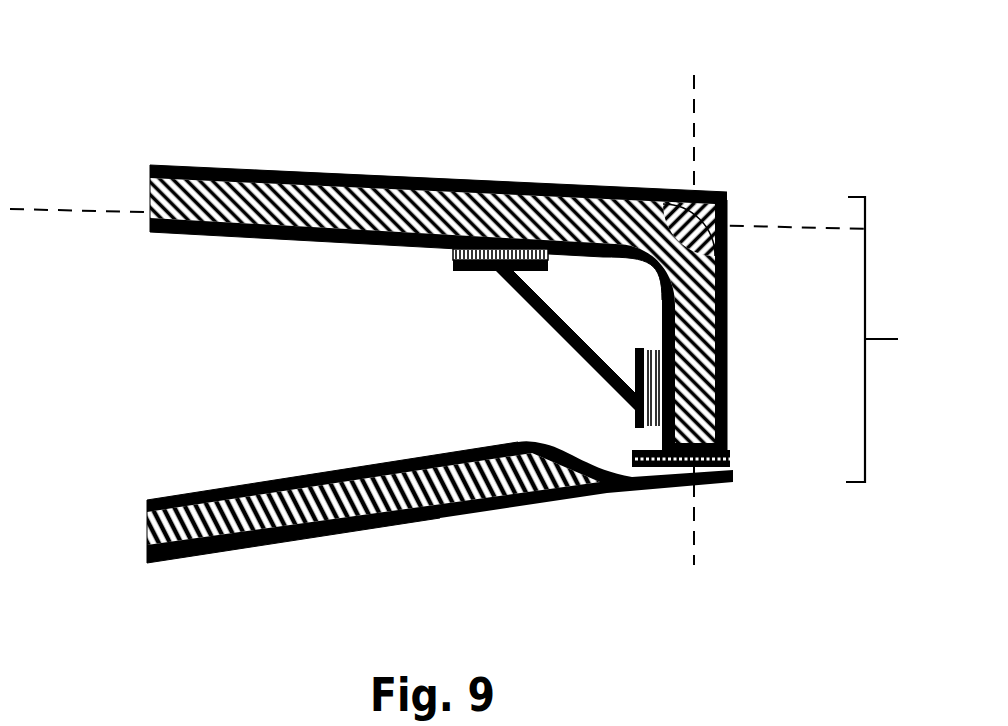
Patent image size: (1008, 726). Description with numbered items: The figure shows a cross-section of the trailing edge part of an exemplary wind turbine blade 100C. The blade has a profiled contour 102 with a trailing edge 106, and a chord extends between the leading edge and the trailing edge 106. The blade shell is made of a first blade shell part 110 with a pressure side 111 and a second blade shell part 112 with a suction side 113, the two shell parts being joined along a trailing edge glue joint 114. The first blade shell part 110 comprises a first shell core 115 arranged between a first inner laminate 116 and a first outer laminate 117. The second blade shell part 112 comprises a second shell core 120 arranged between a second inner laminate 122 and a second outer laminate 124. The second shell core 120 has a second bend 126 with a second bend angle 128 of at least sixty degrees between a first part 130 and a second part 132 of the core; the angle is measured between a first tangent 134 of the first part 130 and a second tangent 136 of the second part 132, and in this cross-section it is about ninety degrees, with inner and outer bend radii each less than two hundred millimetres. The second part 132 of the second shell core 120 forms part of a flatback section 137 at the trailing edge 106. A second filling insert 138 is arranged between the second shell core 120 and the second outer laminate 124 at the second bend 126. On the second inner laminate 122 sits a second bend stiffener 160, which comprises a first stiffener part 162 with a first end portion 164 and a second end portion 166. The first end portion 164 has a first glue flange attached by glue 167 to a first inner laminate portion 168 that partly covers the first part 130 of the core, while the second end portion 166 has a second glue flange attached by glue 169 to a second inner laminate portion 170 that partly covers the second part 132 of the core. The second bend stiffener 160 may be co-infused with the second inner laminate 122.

The wind turbine blade 100C is at (405, 63).
The profiled contour 102 is at (663, 192).
The trailing edge 106 is at (728, 393).
The first blade shell part 110 is at (515, 509).
The pressure side 111 is at (406, 523).
The second blade shell part 112 is at (305, 212).
The suction side 113 is at (412, 192).
The trailing edge glue joint 114 is at (733, 464).
The first shell core 115 is at (147, 518).
The first inner laminate 116 is at (259, 483).
The first outer laminate 117 is at (240, 549).
The second shell core 120 is at (150, 194).
The second inner laminate 122 is at (312, 242).
The second outer laminate 124 is at (208, 167).
The second bend 126 is at (652, 271).
The second bend angle 128 is at (767, 230).
The first part of the second shell core 130 is at (512, 215).
The second part of the second shell core 132 is at (728, 353).
The first tangent 134 is at (838, 227).
The second tangent 136 is at (694, 84).
The flatback section 137 is at (900, 341).
The second filling insert 138 is at (719, 194).
The second bend stiffener 160 is at (548, 318).
The first stiffener part 162 is at (575, 342).
The first end portion 164 is at (472, 272).
The second end portion 166 is at (635, 410).
The glue 167 is at (450, 256).
The first inner laminate portion 168 is at (542, 235).
The glue 169 is at (652, 348).
The second inner laminate portion 170 is at (727, 417).